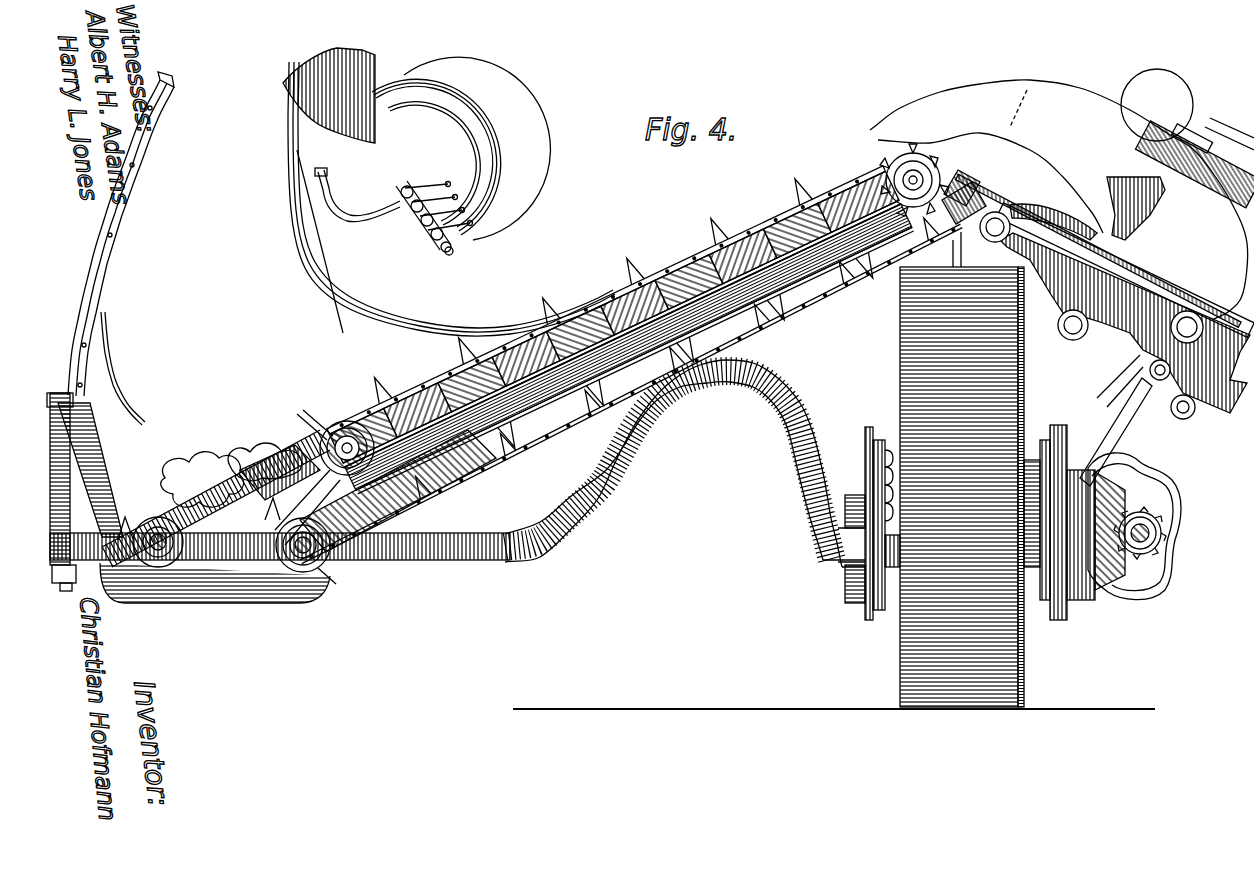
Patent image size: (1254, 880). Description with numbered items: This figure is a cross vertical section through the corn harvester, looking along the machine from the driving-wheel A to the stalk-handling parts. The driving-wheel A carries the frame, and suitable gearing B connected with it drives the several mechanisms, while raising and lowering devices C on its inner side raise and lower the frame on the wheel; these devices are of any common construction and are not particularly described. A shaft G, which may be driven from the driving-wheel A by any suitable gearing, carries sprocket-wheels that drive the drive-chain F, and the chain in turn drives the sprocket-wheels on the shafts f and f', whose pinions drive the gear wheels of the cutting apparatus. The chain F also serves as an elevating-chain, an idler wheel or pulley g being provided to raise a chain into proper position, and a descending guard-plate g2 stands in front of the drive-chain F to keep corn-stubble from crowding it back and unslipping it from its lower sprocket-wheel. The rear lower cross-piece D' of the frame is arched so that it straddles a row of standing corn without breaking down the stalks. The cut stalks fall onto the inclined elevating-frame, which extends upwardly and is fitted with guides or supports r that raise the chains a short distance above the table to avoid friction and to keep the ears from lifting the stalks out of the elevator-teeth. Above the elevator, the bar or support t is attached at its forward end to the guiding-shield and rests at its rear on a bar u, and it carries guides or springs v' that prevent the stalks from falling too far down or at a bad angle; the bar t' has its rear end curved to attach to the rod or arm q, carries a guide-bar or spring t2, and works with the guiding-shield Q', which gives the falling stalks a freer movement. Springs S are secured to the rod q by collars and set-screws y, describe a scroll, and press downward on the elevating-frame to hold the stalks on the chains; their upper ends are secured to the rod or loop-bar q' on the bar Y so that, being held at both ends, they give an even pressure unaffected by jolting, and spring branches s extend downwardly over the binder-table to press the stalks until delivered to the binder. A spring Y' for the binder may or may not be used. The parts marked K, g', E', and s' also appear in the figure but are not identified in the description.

The driving-wheel A is at (973, 487).
The gearing B is at (1102, 487).
The raising and lowering devices C is at (862, 448).
The shaft G is at (900, 172).
The elevator conveyor K is at (582, 347).
The idler wheel or pulley g is at (347, 436).
The drive-chain F is at (300, 418).
The lower roller g' is at (271, 535).
The shaft f' is at (336, 585).
The descending guard-plate g2 is at (215, 595).
The shaft f is at (155, 574).
The guides or supports r is at (163, 537).
The bar u is at (90, 470).
The bar or support t is at (121, 234).
The guides or springs v' is at (123, 368).
The spiked chain E' is at (626, 383).
The lower cross-piece D' is at (685, 477).
The guiding-shield Q' is at (339, 95).
The springs S is at (461, 148).
The bar t' is at (357, 195).
The collars and set-screws y is at (402, 187).
The rod or arm q is at (439, 265).
The guide-bar or spring t2 is at (452, 199).
The spring Y' is at (1059, 200).
The spring branches s is at (990, 183).
The pivot line s' is at (1018, 108).
The bar Y is at (1172, 105).
The rod or loop-bar q' is at (1194, 158).